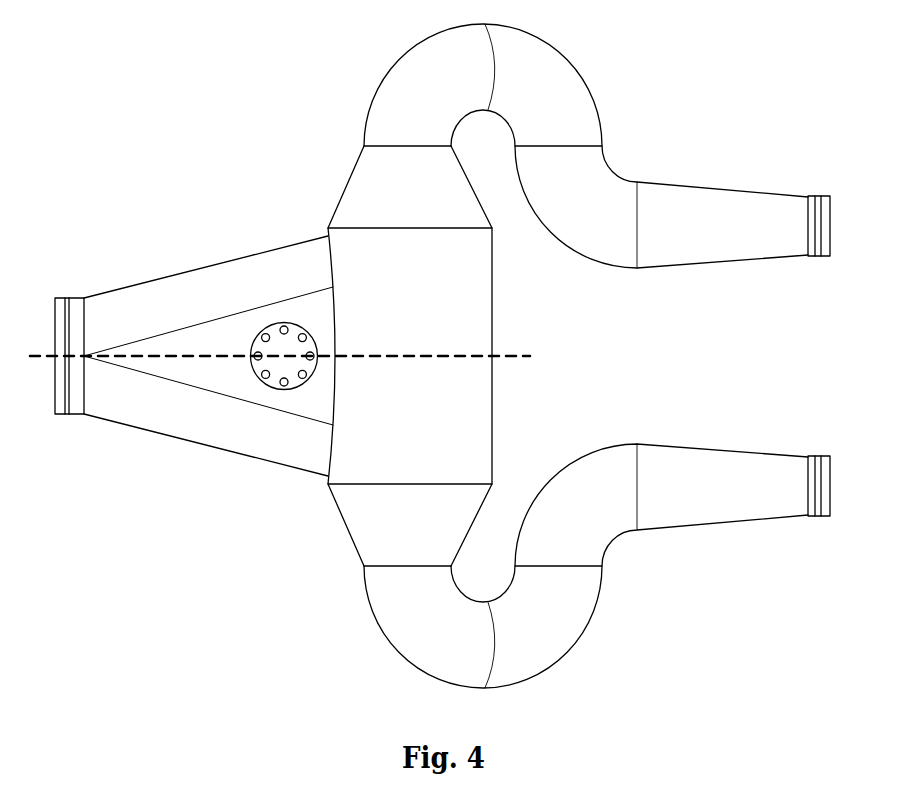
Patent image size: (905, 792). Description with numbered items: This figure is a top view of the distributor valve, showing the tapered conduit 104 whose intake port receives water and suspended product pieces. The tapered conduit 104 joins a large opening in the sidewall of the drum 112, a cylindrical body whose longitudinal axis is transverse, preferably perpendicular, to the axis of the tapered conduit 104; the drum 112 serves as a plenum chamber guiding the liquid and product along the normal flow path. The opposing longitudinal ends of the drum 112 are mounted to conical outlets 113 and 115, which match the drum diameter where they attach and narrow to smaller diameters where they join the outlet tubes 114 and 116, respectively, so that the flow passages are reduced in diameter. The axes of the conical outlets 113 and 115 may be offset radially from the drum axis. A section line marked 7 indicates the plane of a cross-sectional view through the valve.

The tapered conduit 104 is at (203, 283).
The drum 112 is at (500, 396).
The conical outlet 113 is at (368, 515).
The outlet tube 114 is at (412, 622).
The conical outlet 115 is at (360, 195).
The outlet tube 116 is at (410, 78).
The section line 7- 7 is at (41, 375).